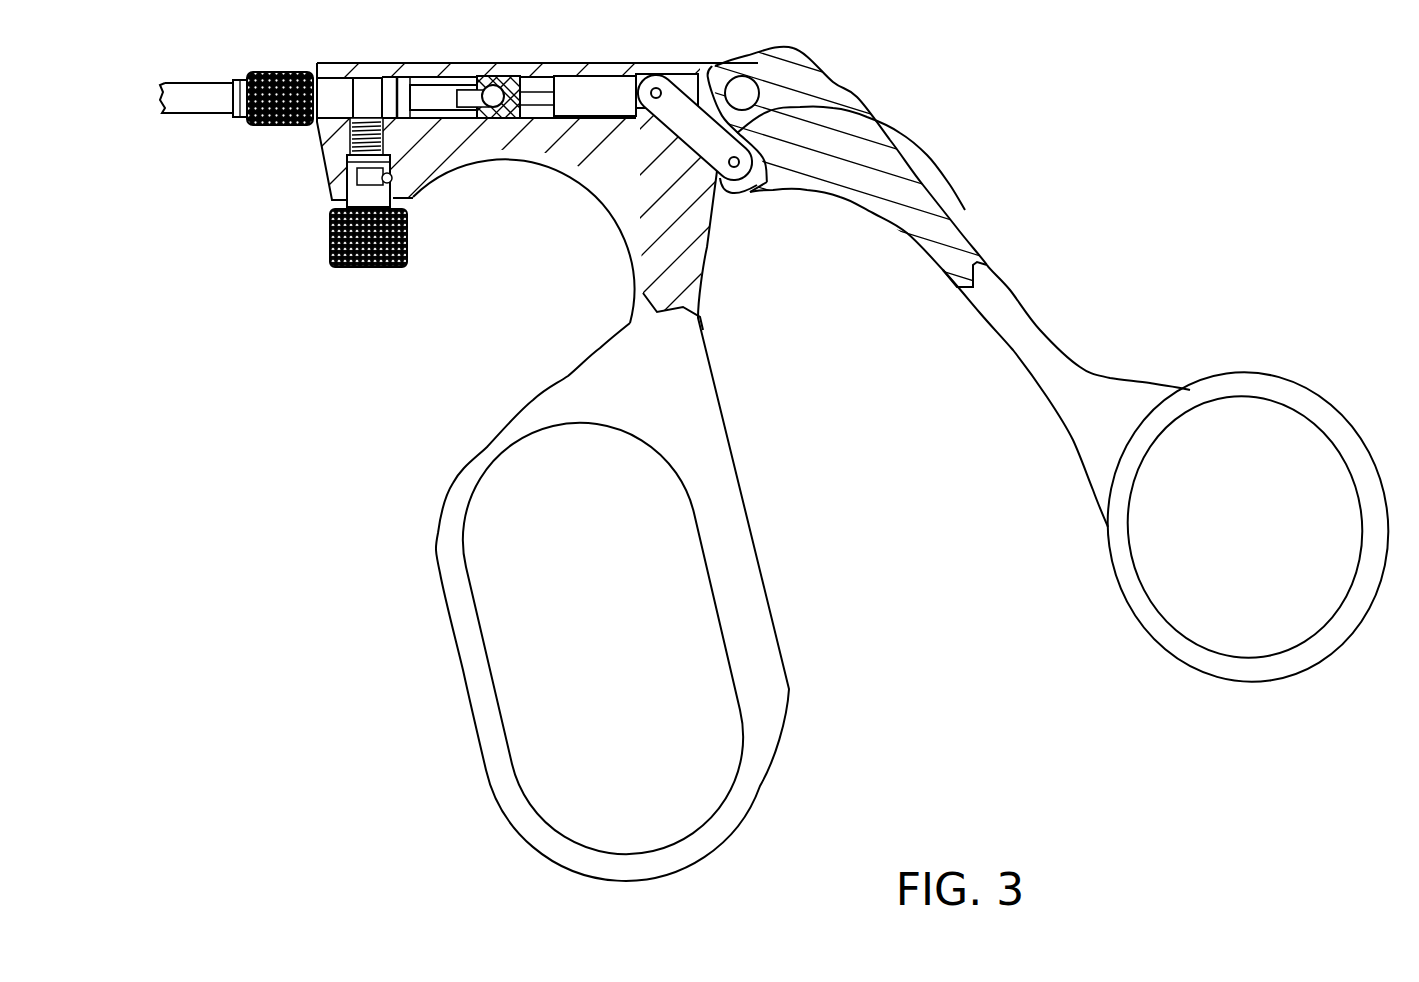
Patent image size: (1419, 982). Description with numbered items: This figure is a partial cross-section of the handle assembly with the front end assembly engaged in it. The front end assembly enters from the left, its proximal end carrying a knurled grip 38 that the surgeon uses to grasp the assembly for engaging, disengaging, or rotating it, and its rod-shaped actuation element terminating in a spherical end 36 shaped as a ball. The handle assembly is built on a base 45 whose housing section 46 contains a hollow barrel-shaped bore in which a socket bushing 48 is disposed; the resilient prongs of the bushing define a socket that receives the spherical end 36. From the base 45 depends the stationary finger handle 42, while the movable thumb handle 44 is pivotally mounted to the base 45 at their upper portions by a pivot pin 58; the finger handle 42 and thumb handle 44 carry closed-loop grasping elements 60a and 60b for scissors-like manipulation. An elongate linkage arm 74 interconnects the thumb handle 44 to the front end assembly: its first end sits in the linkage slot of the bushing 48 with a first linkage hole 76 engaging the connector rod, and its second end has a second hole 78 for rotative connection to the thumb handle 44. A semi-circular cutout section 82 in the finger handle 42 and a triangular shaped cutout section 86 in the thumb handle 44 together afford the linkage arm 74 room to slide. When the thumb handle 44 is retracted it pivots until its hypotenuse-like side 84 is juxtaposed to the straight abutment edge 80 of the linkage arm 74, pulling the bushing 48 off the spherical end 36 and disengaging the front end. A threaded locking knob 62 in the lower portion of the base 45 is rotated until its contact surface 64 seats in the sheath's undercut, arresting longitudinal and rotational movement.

The spherical end 36 is at (495, 74).
The knurled grip 38 is at (270, 72).
The stationary finger handle 42 is at (450, 640).
The movable thumb handle 44 is at (1118, 583).
The base 45 is at (355, 63).
The housing section 46 is at (425, 80).
The socket bushing 48 is at (578, 75).
The pivot pin 58 is at (748, 82).
The grasping element 60a is at (574, 661).
The grasping element 60b is at (1215, 543).
The threaded locking knob 62 is at (332, 265).
The contact surface 64 is at (350, 123).
The linkage arm 74 is at (680, 133).
The first linkage hole 76 is at (657, 88).
The second hole 78 is at (770, 192).
The abutment edge 80 is at (880, 121).
The semi-circular cutout section 82 is at (738, 210).
The hypotenuse-like side 84 is at (767, 182).
The triangular shaped cutout section 86 is at (712, 80).